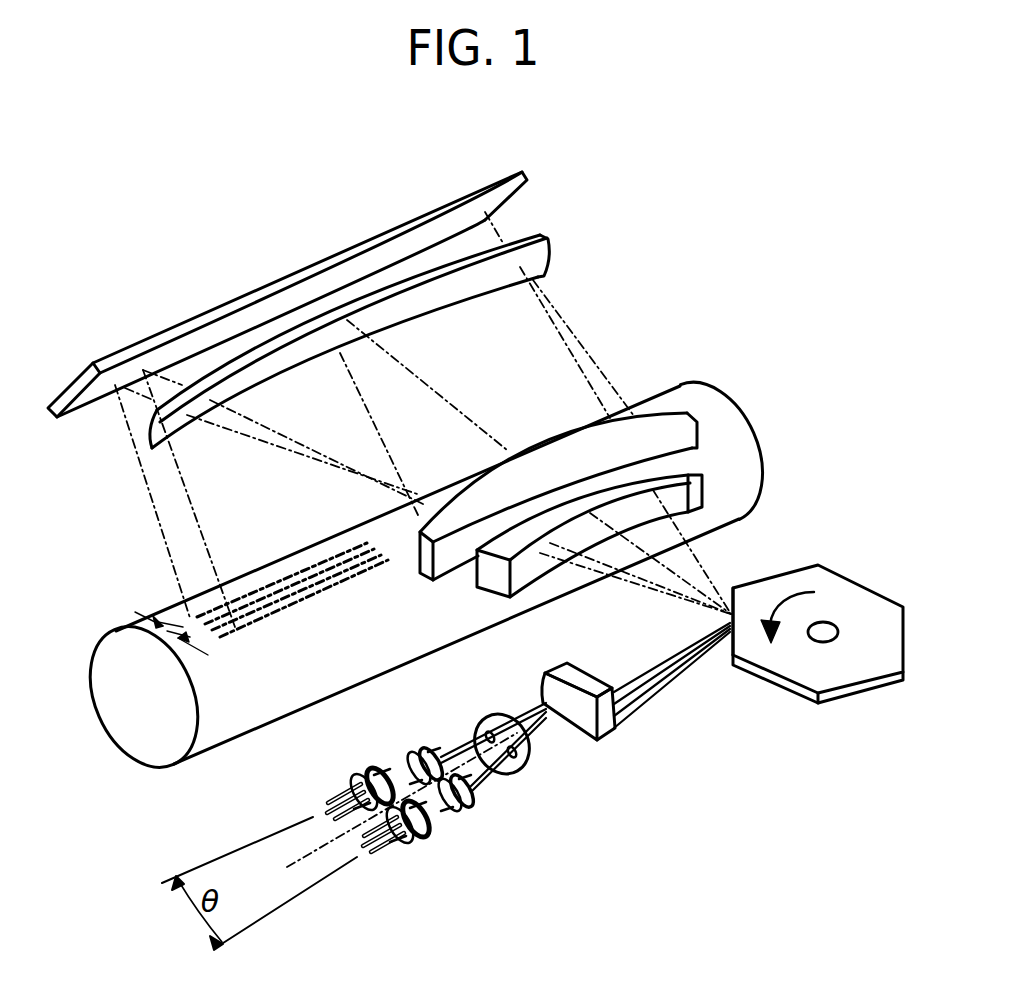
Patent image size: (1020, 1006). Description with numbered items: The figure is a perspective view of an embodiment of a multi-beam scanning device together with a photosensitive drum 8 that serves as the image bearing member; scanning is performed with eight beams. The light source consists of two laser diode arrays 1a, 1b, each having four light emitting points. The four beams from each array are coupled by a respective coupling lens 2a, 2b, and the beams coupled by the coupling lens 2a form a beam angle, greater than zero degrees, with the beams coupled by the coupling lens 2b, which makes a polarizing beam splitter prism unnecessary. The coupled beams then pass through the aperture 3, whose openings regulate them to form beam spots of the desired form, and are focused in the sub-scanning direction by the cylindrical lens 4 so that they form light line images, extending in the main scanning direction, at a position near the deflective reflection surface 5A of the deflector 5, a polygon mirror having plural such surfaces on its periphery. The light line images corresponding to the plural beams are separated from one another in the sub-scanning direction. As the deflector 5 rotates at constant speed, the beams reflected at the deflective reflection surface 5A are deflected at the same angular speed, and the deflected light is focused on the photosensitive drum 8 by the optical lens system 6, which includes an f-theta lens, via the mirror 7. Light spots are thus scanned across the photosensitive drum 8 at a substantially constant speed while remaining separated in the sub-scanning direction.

The laser diode array 1a is at (353, 775).
The laser diode array 1b is at (417, 848).
The coupling lens 2a is at (420, 755).
The coupling lens 2b is at (467, 810).
The aperture 3 is at (513, 773).
The cylindrical lens 4 is at (603, 738).
The deflector 5 is at (837, 693).
The deflective reflection surface 5A is at (732, 640).
The optical lens system 6 is at (727, 477).
The mirror 7 is at (477, 187).
The photosensitive drum 8 is at (113, 713).